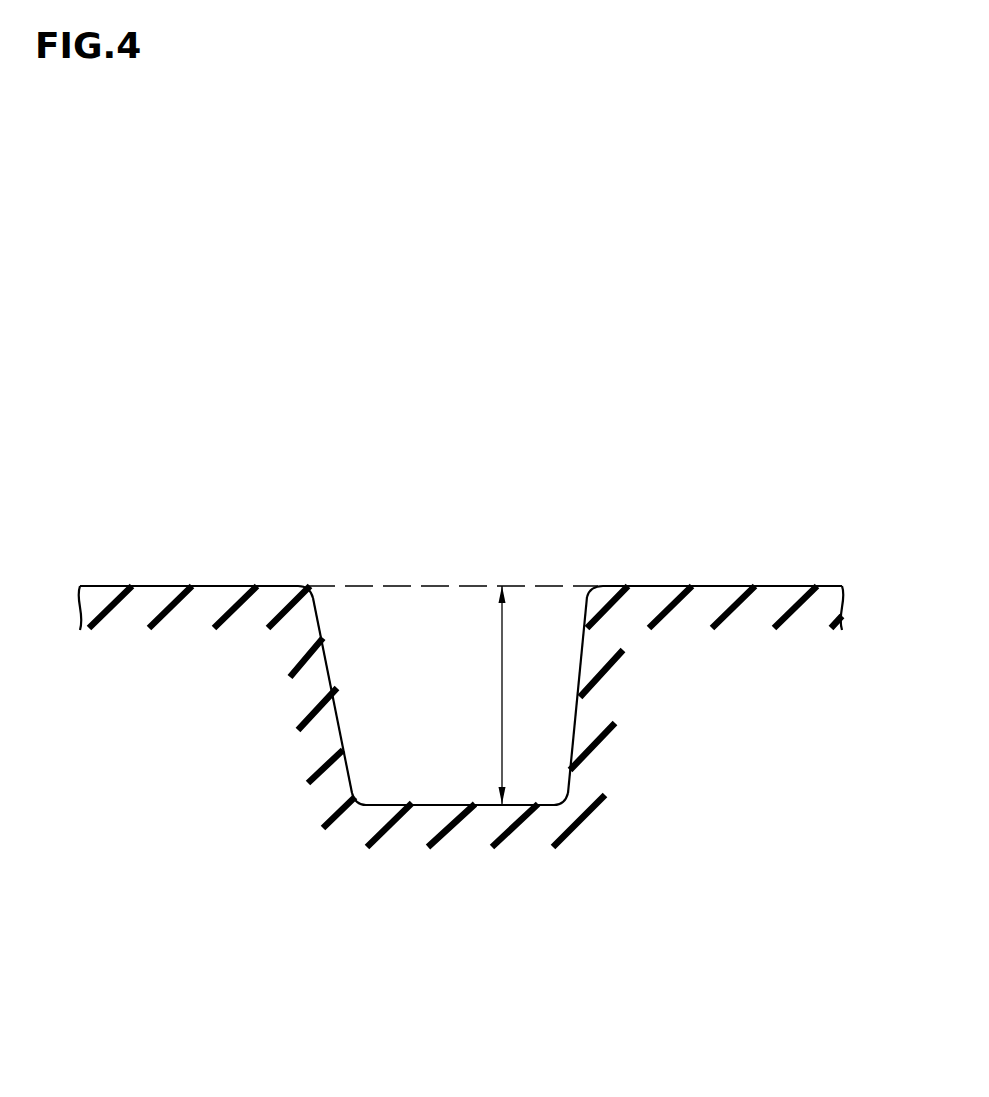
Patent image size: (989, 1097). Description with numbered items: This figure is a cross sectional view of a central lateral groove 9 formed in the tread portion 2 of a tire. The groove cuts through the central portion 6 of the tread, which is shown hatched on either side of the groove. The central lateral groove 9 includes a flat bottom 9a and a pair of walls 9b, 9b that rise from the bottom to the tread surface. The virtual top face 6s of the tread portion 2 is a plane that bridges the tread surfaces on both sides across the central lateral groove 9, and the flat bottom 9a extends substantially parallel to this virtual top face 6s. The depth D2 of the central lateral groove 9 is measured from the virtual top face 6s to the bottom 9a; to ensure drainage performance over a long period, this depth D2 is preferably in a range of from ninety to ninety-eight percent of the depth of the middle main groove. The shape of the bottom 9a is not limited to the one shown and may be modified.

The tread portion 2 is at (655, 373).
The central portion 6 is at (188, 585).
The virtual top face 6s is at (545, 587).
The central lateral groove 9 is at (451, 714).
The flat bottom 9a is at (445, 805).
The wall 9b is at (320, 740).
The depth of the central lateral groove D2 is at (505, 695).